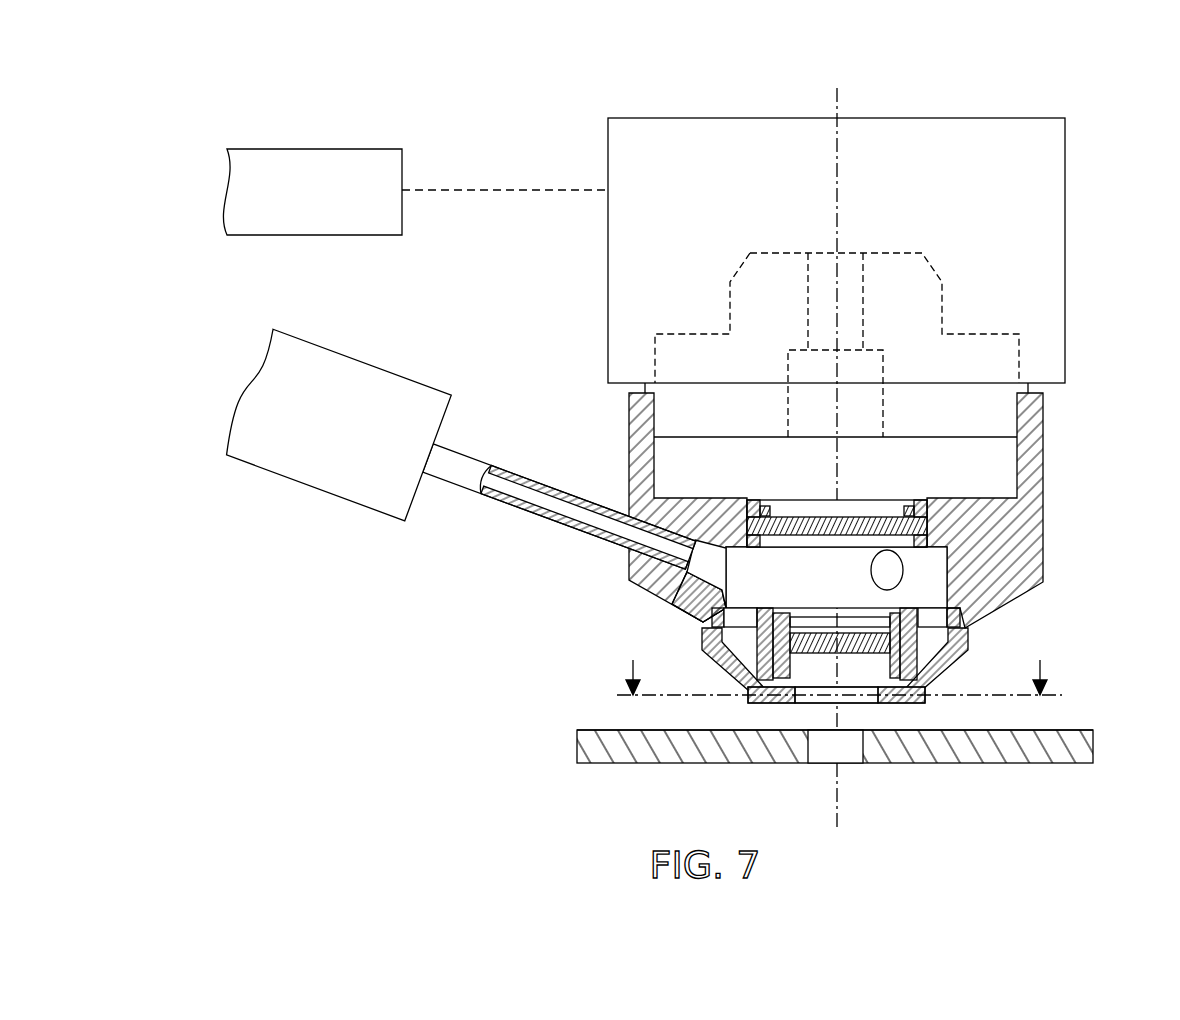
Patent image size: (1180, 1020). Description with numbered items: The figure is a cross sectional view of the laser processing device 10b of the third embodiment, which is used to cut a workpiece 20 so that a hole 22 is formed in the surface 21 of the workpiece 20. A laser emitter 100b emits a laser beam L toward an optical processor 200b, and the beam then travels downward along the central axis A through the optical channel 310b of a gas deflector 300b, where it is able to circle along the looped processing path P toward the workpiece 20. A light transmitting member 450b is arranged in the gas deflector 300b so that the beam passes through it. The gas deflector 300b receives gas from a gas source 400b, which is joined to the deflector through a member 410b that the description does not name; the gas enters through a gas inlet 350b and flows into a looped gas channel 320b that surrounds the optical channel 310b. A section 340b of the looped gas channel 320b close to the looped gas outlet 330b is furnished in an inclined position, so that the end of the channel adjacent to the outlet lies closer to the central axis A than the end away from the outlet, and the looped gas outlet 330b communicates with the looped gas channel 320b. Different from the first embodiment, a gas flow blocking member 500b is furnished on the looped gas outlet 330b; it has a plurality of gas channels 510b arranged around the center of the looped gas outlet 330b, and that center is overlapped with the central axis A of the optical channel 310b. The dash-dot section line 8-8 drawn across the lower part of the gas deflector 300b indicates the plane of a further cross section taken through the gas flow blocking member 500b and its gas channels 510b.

The laser processing device 10b is at (132, 116).
The laser emitter 100b is at (311, 149).
The laser beam L is at (500, 190).
The central axis A is at (836, 445).
The optical processor 200b is at (993, 118).
The gas deflector 300b is at (1063, 527).
The optical channel 310b is at (896, 505).
The gas inlet 350b is at (690, 576).
The gas source 400b is at (362, 382).
The tube 410b is at (485, 472).
The light transmitting member 450b is at (975, 630).
The looped gas channel 320b is at (723, 670).
The looped gas outlet 330b is at (762, 703).
The inclined section of looped gas channel 340b is at (740, 702).
The gas flow blocking member 500b is at (915, 710).
The gas channels 510b is at (891, 714).
The section line 8- 8 is at (839, 665).
The workpiece 20 is at (862, 748).
The surface 21 is at (1070, 724).
The hole 22 is at (819, 745).
The looped processing path P is at (857, 736).